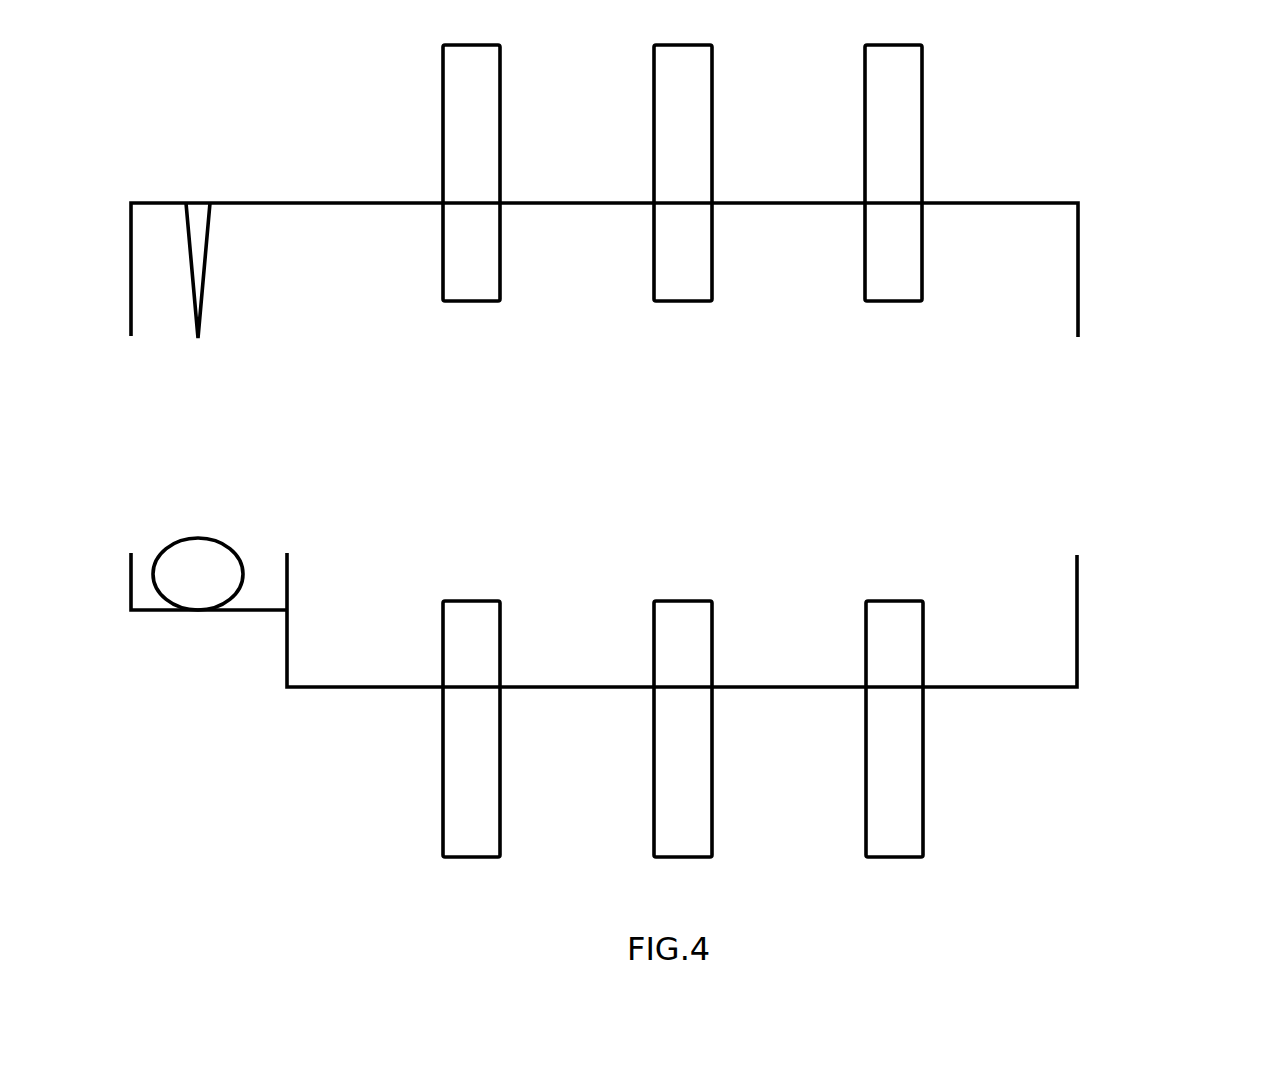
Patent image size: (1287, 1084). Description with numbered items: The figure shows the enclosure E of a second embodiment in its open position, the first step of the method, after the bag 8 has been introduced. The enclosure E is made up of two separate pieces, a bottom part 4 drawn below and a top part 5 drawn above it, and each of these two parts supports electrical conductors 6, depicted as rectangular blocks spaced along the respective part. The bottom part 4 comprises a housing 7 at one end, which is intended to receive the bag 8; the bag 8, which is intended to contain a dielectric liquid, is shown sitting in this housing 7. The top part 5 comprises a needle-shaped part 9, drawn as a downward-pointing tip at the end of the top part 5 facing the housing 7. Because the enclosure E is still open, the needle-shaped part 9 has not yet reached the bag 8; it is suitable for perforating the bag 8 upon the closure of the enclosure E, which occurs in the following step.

The bottom part 4 is at (1079, 573).
The top part 5 is at (1079, 251).
The electrical conductors 6 is at (883, 146).
The housing 7 is at (270, 608).
The bag 8 is at (185, 582).
The needle-shaped part 9 is at (200, 211).
The enclosure E is at (955, 385).